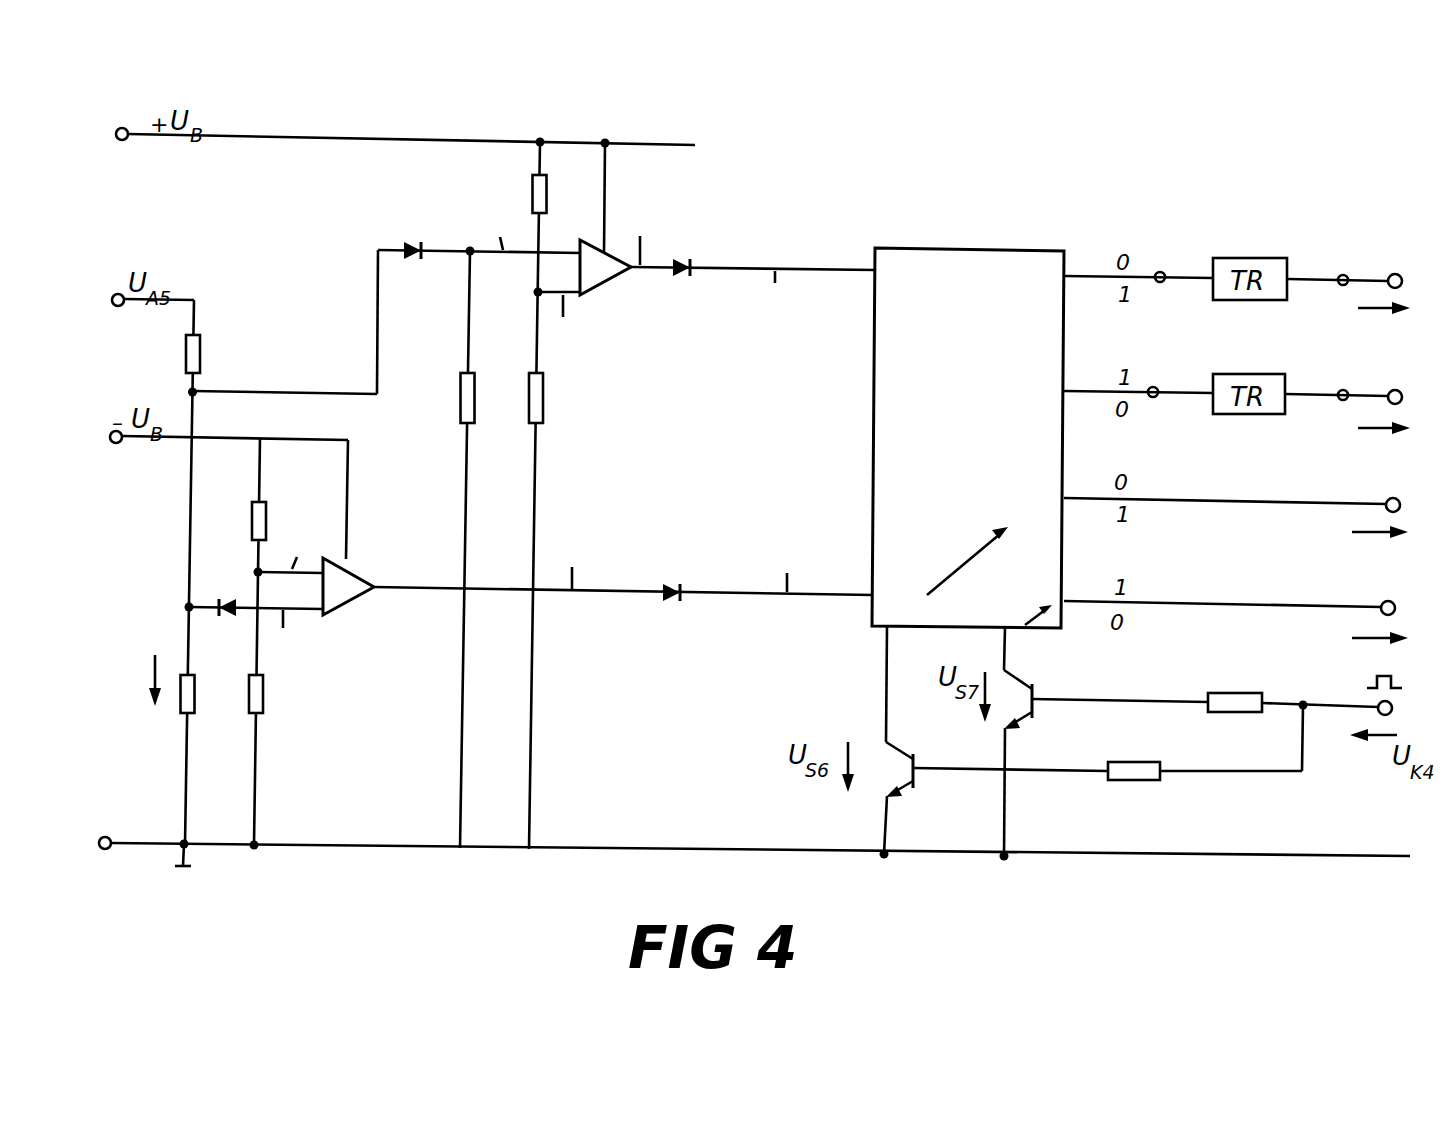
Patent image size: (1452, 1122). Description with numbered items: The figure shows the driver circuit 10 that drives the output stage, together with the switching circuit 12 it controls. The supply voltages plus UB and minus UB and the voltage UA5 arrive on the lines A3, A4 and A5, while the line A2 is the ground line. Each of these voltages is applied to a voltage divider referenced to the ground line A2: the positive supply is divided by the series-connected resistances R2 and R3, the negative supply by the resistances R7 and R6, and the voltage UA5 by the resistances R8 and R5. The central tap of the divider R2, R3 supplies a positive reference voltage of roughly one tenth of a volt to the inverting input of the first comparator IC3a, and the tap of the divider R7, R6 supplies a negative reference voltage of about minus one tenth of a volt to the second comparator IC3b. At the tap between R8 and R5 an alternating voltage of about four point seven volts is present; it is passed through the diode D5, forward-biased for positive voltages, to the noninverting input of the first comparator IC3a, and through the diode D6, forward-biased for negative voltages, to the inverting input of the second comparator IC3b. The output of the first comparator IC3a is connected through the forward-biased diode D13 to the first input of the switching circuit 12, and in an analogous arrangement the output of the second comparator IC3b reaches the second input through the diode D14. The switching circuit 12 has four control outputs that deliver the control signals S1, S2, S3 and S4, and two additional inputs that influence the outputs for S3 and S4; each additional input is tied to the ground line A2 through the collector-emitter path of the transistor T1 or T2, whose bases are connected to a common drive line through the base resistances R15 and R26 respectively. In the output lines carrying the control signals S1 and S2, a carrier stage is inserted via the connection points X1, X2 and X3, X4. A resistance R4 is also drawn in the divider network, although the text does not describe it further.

The driver circuit 10 is at (728, 197).
The switching circuit 12 is at (1003, 238).
The resistance R2 is at (560, 194).
The resistance R3 is at (557, 398).
The resistor R4 is at (489, 398).
The resistance R5 is at (208, 694).
The resistance R6 is at (277, 694).
The resistance R7 is at (236, 521).
The resistance R8 is at (214, 354).
The base resistance R15 is at (1136, 754).
The base resistance R26 is at (1235, 686).
The diode D5 is at (411, 228).
The diode D6 is at (218, 592).
The diode D13 is at (691, 254).
The diode D14 is at (679, 575).
The transistor T1 is at (907, 759).
The transistor T2 is at (1029, 693).
The first comparator IC3a is at (606, 279).
The second comparator IC3b is at (350, 600).
The ground line A2 is at (76, 846).
The line A3 is at (96, 138).
The line A4 is at (88, 439).
The line A5 is at (92, 303).
The control signal S1 is at (1417, 283).
The control signal S2 is at (1417, 399).
The control signal S3 is at (1415, 506).
The control signal S4 is at (1409, 660).
The connection point X1 is at (1164, 260).
The connection point X2 is at (1346, 261).
The connection point X3 is at (1163, 375).
The connection point X4 is at (1346, 377).